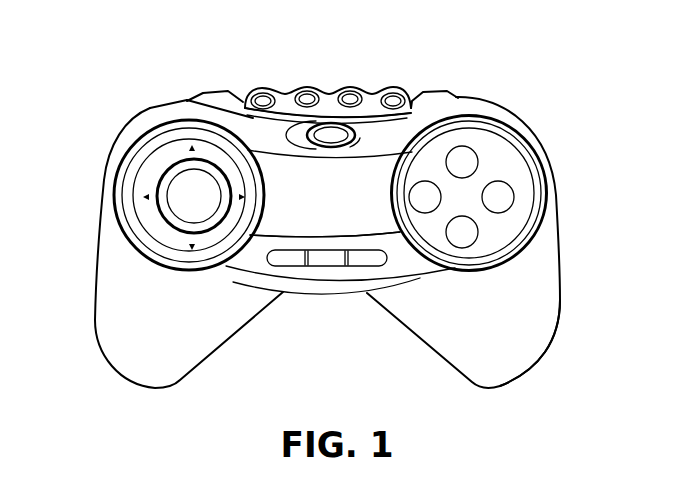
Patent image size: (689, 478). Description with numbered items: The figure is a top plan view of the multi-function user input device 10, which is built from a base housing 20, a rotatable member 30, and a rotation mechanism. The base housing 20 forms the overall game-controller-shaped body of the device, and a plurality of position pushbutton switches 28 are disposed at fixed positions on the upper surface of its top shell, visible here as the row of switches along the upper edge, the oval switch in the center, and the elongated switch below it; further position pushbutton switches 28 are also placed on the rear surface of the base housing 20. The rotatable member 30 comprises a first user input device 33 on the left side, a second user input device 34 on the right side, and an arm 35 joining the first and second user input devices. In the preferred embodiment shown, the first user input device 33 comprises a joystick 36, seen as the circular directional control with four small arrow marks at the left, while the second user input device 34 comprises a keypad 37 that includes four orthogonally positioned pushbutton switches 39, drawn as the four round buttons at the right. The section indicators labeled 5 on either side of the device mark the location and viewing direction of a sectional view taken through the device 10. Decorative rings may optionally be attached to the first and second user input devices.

The multi-function user input device 10 is at (140, 80).
The base housing 20 is at (530, 327).
The position pushbutton switches 28 is at (212, 90).
The rotatable member 30 is at (389, 152).
The first user input device 33 is at (143, 208).
The second user input device 34 is at (545, 144).
The arm 35 is at (330, 222).
The joystick 36 is at (202, 200).
The keypad 37 is at (528, 220).
The pushbutton switches 39 is at (462, 232).
The section view indicator 5 is at (73, 203).